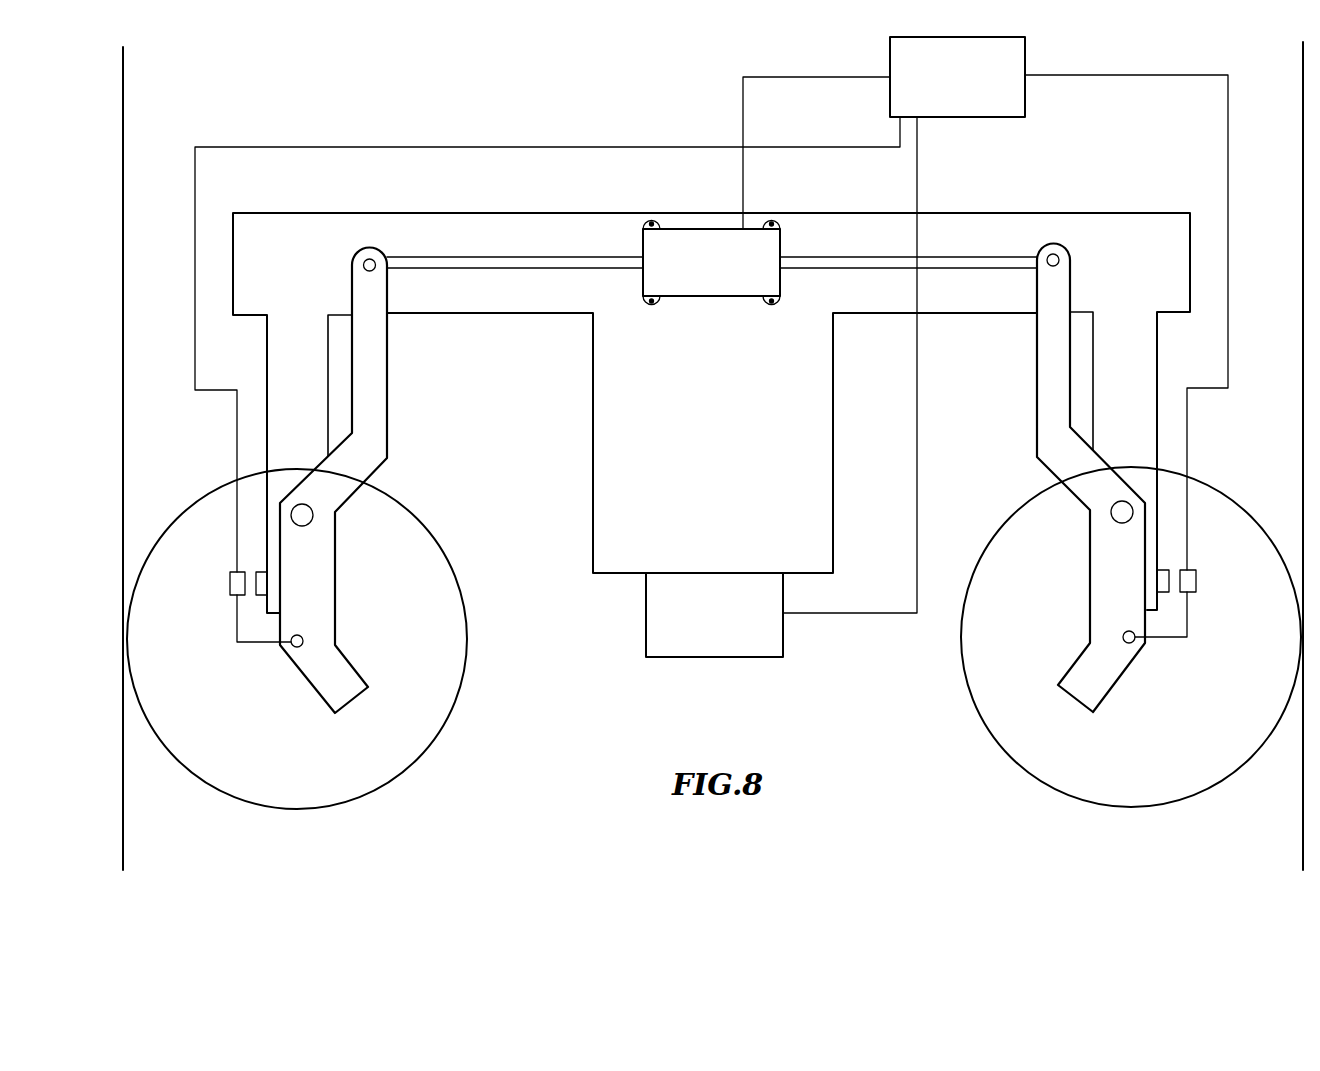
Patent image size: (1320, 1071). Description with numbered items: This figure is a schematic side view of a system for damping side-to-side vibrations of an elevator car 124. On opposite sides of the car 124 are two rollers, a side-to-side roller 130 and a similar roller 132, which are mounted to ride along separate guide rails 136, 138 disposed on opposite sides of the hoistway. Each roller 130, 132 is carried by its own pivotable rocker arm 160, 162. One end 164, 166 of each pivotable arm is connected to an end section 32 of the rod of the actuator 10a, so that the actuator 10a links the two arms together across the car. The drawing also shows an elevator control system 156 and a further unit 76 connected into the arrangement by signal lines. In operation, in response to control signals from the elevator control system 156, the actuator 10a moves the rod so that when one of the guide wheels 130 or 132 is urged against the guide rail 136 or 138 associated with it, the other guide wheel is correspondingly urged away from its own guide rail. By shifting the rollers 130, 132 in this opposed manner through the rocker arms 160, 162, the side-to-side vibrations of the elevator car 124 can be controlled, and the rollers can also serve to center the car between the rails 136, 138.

The actuator 10a is at (692, 245).
The end section of actuator rod 32 is at (510, 262).
The control unit 76 is at (723, 632).
The elevator car 124 is at (1123, 262).
The side-to-side roller 130 is at (234, 731).
The roller 132 is at (1022, 656).
The guide rail 136 is at (123, 100).
The guide rail 138 is at (1302, 68).
The elevator control system 156 is at (966, 99).
The pivotable rocker arm 160 is at (372, 387).
The pivotable rocker arm 162 is at (1050, 397).
The end of pivotable arm 164 is at (369, 250).
The end of pivotable arm 166 is at (1058, 248).